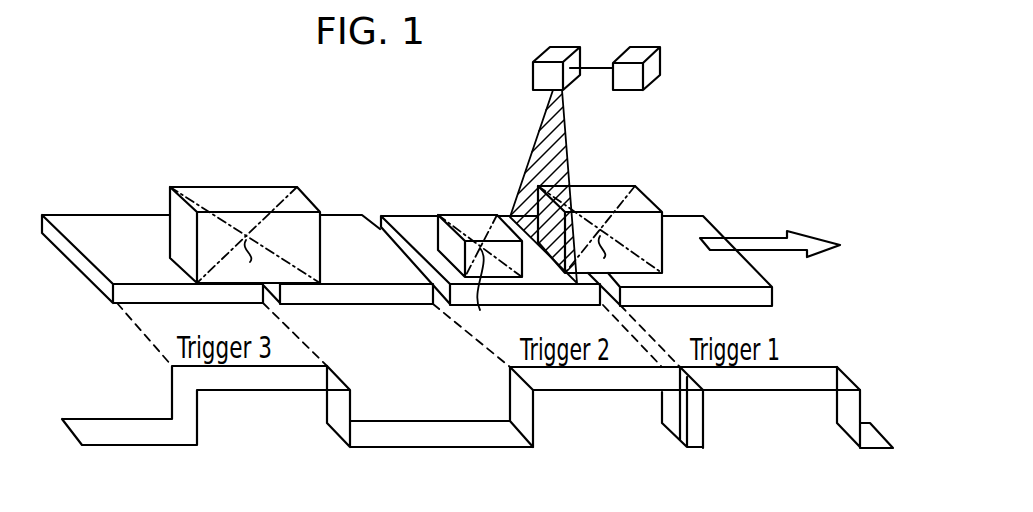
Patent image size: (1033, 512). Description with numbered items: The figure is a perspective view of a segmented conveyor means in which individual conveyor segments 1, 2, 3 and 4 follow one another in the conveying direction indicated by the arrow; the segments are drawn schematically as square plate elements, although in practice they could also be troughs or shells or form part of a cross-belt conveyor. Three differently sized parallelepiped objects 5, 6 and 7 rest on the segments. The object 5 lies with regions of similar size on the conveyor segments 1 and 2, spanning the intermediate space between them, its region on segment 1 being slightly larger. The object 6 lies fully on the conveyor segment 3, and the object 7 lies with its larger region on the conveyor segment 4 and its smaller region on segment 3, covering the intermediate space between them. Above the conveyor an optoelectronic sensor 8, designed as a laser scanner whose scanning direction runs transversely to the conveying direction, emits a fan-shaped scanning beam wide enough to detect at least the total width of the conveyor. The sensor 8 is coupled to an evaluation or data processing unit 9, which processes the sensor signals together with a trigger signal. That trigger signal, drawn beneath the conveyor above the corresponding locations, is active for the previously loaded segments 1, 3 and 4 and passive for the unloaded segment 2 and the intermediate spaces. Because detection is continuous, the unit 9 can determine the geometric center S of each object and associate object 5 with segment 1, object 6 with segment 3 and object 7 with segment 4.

The conveyor segment 1 is at (107, 233).
The conveyor segment 2 is at (342, 238).
The conveyor segment 3 is at (410, 226).
The conveyor segment 4 is at (682, 237).
The object 5 is at (242, 202).
The object 6 is at (470, 222).
The object 7 is at (602, 203).
The optoelectronic sensor 8 is at (561, 48).
The evaluation or data processing unit 9 is at (642, 52).